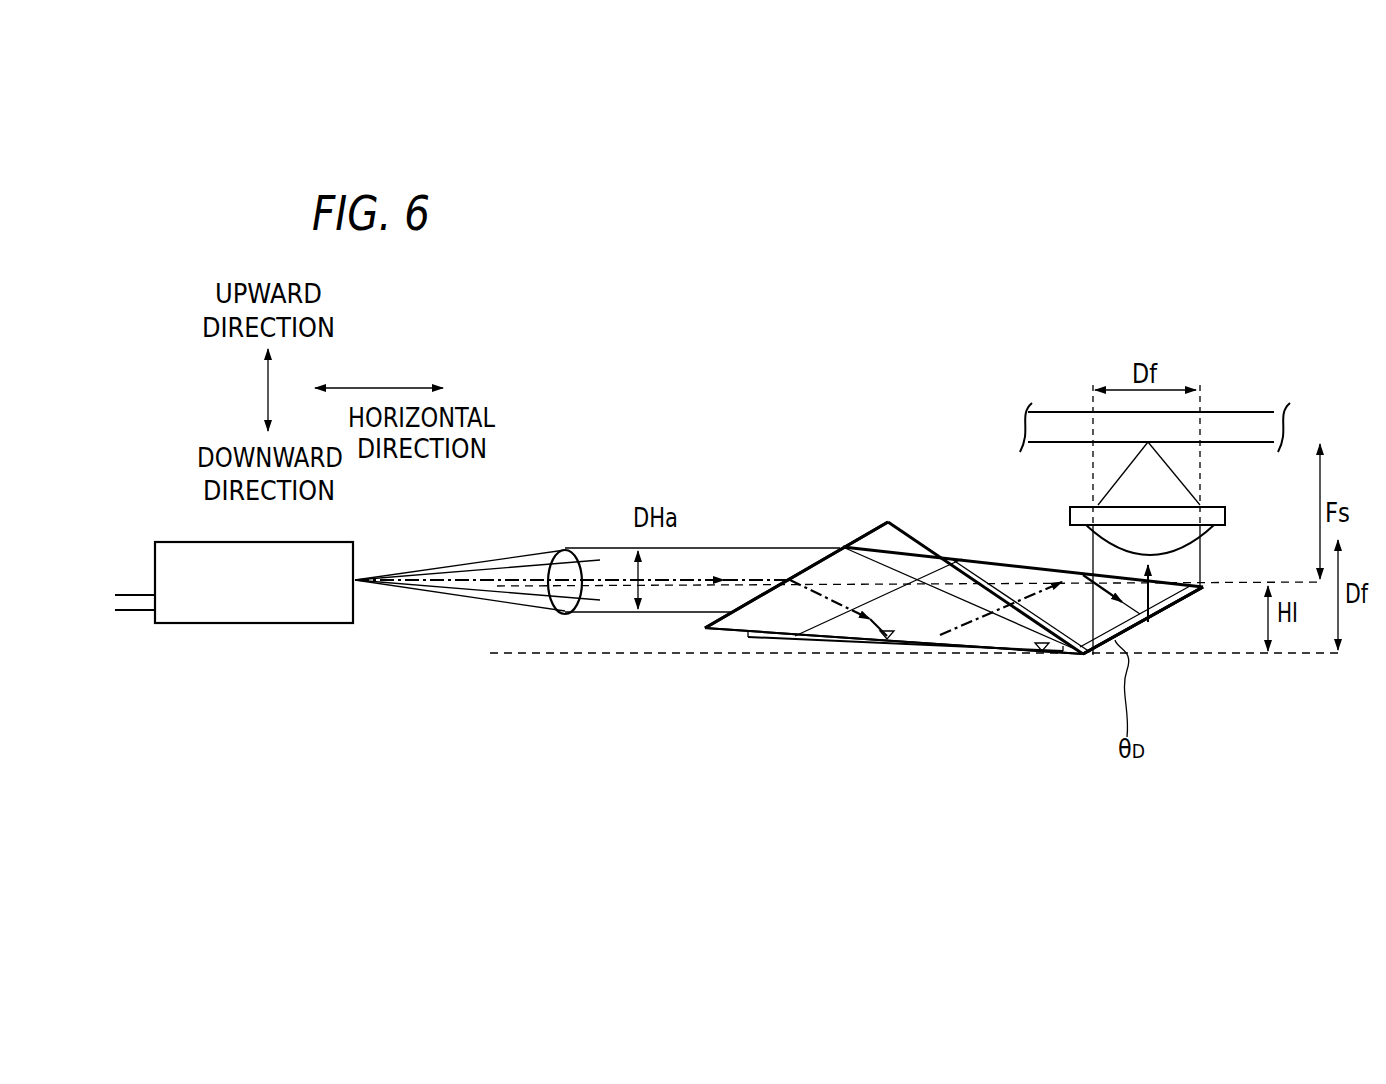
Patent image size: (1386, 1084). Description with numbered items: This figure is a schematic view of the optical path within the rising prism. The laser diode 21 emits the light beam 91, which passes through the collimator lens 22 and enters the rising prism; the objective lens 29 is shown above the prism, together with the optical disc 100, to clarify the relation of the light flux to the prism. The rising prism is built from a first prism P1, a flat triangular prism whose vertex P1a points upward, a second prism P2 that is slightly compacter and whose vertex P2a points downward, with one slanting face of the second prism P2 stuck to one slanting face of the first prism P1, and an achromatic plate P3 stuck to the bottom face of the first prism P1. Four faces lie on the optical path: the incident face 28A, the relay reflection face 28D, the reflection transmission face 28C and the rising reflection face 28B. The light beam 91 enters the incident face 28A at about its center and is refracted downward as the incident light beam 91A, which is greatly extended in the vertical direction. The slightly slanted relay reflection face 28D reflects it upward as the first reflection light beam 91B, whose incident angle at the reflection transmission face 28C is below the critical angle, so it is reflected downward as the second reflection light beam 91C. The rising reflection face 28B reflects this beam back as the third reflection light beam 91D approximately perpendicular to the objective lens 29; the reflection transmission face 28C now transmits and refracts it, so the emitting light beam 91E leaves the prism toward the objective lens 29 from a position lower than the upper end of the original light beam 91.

The laser diode 21 is at (248, 623).
The collimator lens 22 is at (565, 549).
The light beam 91 is at (463, 600).
The incident face 28A is at (857, 540).
The rising reflection face 28B is at (1185, 600).
The reflection transmission face 28C is at (980, 552).
The relay reflection face 28D is at (806, 640).
The incident light beam 91A is at (843, 608).
The first reflection light beam 91B is at (1003, 600).
The second reflection light beam 91C is at (1180, 612).
The third reflection light beam 91D is at (1207, 590).
The emitting light beam 91E is at (1093, 548).
The objective lens 29 is at (1225, 516).
The optical recording medium 100 is at (1060, 408).
The first prism P1 is at (877, 528).
The vertex of the first prism P1a is at (888, 522).
The second prism P2 is at (1066, 645).
The vertex of the second prism P2a is at (1082, 654).
The achromatic plate P3 is at (887, 643).